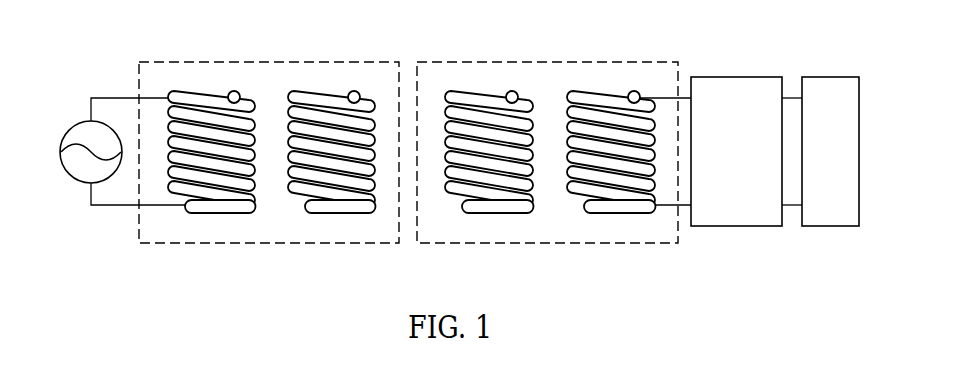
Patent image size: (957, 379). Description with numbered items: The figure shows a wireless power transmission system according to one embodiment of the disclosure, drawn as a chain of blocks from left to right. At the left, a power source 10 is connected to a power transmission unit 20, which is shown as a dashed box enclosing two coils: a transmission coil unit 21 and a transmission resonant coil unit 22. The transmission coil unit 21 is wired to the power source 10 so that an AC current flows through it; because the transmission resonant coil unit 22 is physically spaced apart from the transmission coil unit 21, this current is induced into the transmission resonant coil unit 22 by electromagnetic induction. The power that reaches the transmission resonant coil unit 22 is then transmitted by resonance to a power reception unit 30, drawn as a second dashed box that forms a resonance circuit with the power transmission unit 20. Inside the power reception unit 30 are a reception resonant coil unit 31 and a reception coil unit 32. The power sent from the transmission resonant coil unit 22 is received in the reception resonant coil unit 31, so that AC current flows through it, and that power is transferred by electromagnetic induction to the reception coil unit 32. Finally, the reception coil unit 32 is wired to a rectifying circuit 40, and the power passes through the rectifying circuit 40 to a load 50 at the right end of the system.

The power source 10 is at (68, 127).
The power transmission unit 20 is at (182, 62).
The transmission coil unit 21 is at (218, 103).
The transmission resonant coil unit 22 is at (333, 103).
The power reception unit 30 is at (545, 62).
The reception resonant coil unit 31 is at (468, 98).
The reception coil unit 32 is at (598, 100).
The rectifying circuit 40 is at (722, 77).
The load 50 is at (833, 77).